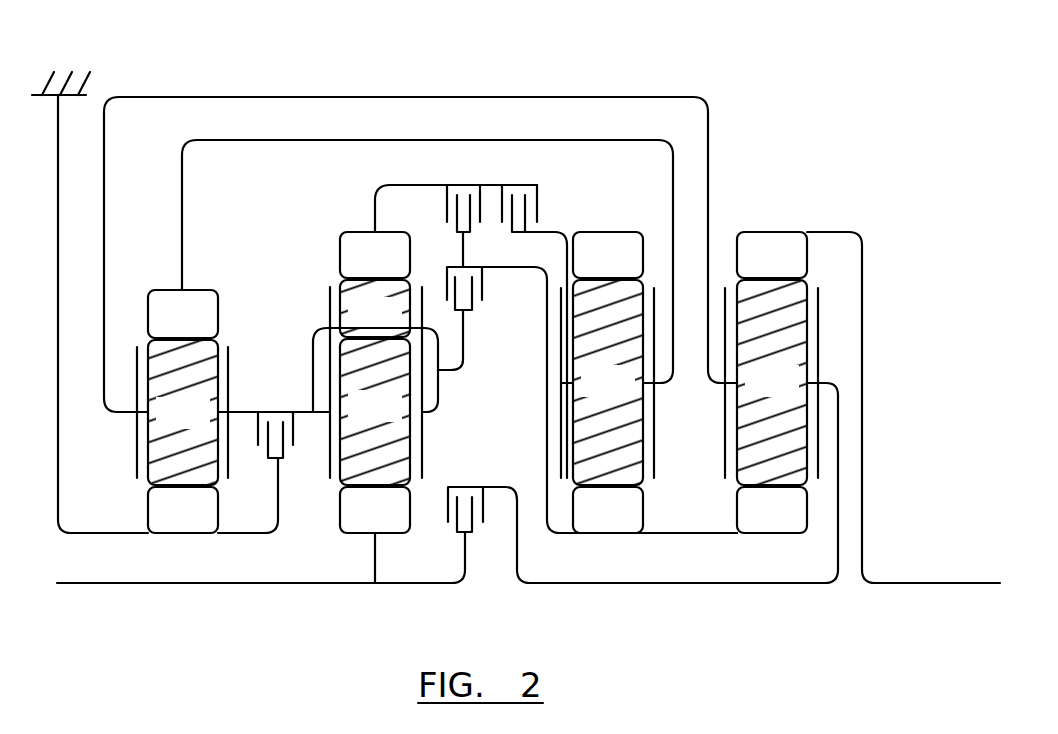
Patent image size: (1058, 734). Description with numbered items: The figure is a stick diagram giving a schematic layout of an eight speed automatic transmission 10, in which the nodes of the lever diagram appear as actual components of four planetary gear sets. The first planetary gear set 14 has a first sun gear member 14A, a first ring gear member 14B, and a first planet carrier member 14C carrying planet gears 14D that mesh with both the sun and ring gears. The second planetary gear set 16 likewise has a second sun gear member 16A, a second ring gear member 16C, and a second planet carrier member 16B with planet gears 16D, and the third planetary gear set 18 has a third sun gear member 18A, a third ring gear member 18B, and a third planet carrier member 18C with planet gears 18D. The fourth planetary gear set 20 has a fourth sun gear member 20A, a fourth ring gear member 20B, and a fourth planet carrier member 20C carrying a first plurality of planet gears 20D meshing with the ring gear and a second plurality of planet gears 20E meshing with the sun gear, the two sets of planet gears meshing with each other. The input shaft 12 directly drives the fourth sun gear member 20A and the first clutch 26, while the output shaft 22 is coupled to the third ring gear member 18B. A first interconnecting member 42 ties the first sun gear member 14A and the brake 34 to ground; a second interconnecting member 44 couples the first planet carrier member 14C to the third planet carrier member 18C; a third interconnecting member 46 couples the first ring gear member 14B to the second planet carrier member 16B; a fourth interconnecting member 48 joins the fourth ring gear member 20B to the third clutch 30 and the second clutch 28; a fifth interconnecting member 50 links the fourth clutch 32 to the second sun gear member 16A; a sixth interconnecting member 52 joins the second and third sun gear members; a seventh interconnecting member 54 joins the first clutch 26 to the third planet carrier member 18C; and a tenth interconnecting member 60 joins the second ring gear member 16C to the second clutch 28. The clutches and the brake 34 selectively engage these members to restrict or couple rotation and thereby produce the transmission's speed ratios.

The eight speed transmission 10 is at (798, 86).
The input shaft or member 12 is at (112, 585).
The first planetary gear set 14 is at (205, 436).
The first sun gear member 14A is at (206, 527).
The first ring gear member 14B is at (206, 331).
The first planet carrier member 14C is at (233, 369).
The planet gears 14D is at (206, 425).
The second planetary gear set 16 is at (618, 407).
The second sun gear member 16A is at (631, 527).
The second planet carrier member 16B is at (659, 443).
The second ring gear member 16C is at (631, 272).
The planet gears 16D is at (631, 393).
The third planetary gear set 18 is at (754, 407).
The third sun gear member 18A is at (795, 527).
The third ring gear member 18B is at (795, 272).
The third planet carrier member 18C is at (722, 398).
The planet gears 18D is at (795, 393).
The fourth planetary gear set 20 is at (372, 407).
The fourth sun gear member 20A is at (398, 527).
The fourth ring gear member 20B is at (398, 272).
The fourth planet carrier member 20C is at (330, 308).
The first plurality of planet gears 20D is at (398, 325).
The second plurality of planet gears 20E is at (398, 418).
The output shaft or member 22 is at (905, 585).
The first clutch 26 is at (486, 511).
The second clutch 28 is at (540, 206).
The third clutch 30 is at (447, 203).
The fourth clutch 32 is at (448, 290).
The brake 34 is at (296, 423).
The first shaft or interconnecting member 42 is at (57, 325).
The second shaft or interconnecting member 44 is at (237, 97).
The third shaft or interconnecting member 46 is at (266, 140).
The fourth shaft or interconnecting member 48 is at (410, 185).
The fifth shaft or interconnecting member 50 is at (609, 400).
The sixth shaft or interconnecting member 52 is at (677, 536).
The seventh shaft or interconnecting member 54 is at (568, 585).
The tenth shaft or interconnecting member 60 is at (563, 240).